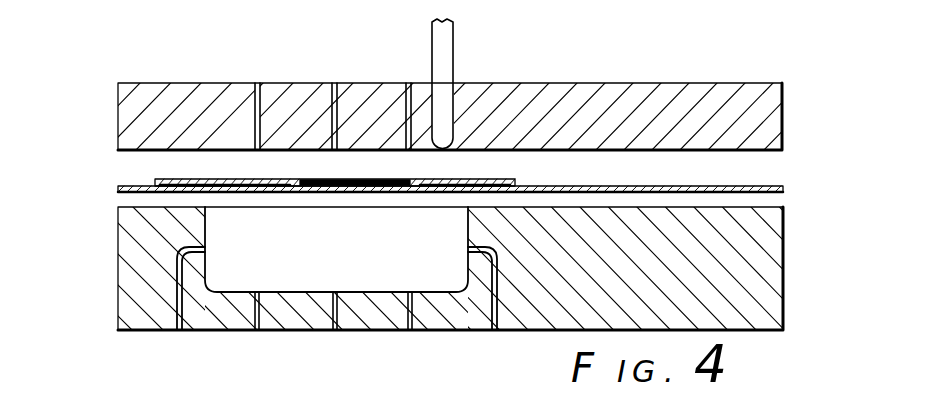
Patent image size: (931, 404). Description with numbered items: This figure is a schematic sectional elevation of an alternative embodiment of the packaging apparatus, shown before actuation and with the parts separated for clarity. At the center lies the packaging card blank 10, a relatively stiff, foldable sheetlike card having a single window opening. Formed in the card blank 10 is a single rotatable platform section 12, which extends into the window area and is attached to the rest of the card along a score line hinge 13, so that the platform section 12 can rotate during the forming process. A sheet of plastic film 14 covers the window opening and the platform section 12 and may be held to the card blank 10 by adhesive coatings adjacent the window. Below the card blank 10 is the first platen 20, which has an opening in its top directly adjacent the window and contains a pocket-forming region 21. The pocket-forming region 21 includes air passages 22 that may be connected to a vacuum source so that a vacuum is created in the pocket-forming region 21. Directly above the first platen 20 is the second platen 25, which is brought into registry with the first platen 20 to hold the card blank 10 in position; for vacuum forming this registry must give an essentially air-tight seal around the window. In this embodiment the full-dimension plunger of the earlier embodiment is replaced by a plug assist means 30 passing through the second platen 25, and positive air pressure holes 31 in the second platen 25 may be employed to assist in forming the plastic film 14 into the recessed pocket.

The packaging card blank 10 is at (417, 196).
The platform section 12 is at (418, 193).
The score line hinge 13 is at (465, 193).
The plastic film 14 is at (268, 192).
The first platen 20 is at (765, 272).
The pocket-forming region 21 is at (308, 267).
The air passages 22 is at (408, 330).
The second platen 25 is at (770, 125).
The plug assist means 30 is at (447, 49).
The positive air pressure holes 31 is at (406, 97).